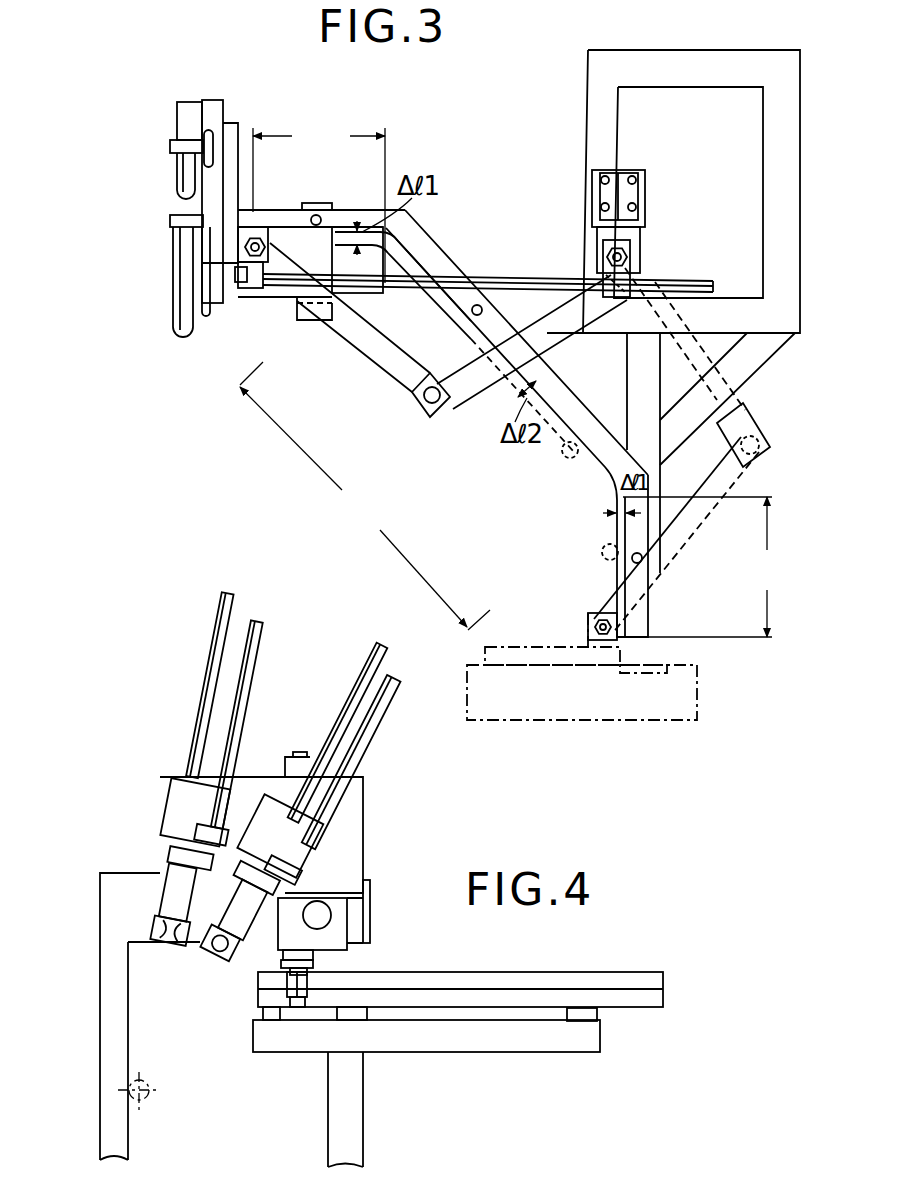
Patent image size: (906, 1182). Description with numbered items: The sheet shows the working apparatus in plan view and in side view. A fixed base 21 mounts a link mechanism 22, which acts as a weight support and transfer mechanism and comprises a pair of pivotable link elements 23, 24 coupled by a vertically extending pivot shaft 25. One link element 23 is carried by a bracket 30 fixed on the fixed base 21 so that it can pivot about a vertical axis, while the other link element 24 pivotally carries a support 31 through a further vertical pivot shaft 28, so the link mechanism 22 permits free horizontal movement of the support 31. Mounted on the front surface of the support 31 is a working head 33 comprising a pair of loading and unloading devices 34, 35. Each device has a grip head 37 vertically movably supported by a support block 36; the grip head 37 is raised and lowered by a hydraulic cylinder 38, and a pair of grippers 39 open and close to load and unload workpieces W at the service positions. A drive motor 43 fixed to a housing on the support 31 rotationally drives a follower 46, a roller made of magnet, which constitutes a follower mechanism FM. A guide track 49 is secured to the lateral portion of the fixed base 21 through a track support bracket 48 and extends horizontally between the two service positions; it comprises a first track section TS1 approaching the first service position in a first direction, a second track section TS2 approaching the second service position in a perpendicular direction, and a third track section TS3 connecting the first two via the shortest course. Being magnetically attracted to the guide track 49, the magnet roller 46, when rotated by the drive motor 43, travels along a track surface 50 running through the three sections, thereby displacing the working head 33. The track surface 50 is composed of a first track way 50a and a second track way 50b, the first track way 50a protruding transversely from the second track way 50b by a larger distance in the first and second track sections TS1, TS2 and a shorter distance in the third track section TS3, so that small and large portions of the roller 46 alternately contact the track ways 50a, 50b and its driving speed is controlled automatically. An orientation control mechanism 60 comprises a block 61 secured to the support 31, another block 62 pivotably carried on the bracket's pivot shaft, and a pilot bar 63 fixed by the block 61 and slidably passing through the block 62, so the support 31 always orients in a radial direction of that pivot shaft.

In FIG. 3, the fixed base 21 is at (793, 333).
In FIG. 4, the fixed base 21 is at (110, 990).
In FIG. 3, the link mechanism 22 is at (355, 378).
In FIG. 3, the link element 23 is at (533, 333).
In FIG. 3, the link element 24 is at (346, 342).
In FIG. 3, the pivot shaft 25 is at (433, 413).
In FIG. 3, the pivot shaft 28 is at (257, 236).
In FIG. 3, the bracket 30 is at (642, 233).
In FIG. 3, the support 31 is at (226, 130).
In FIG. 4, the support 31 is at (355, 835).
In FIG. 3, the working head 33 is at (150, 239).
In FIG. 4, the loading and unloading device 34 is at (185, 723).
In FIG. 4, the loading and unloading device 35 is at (365, 762).
In FIG. 4, the support block 36 is at (180, 805).
In FIG. 4, the grip head 37 is at (170, 892).
In FIG. 4, the hydraulic cylinder 38 is at (245, 670).
In FIG. 4, the grippers 39 is at (150, 928).
In FIG. 3, the drive motor 43 is at (385, 262).
In FIG. 4, the drive motor 43 is at (330, 916).
In FIG. 3, the follower 46 is at (562, 458).
In FIG. 4, the follower 46 is at (315, 975).
In FIG. 3, the track support bracket 48 is at (648, 430).
In FIG. 4, the track support bracket 48 is at (480, 1040).
In FIG. 3, the guide track 49 is at (650, 522).
In FIG. 4, the guide track 49 is at (633, 975).
In FIG. 3, the track surface 50 is at (447, 305).
In FIG. 3, the first track way 50a is at (468, 332).
In FIG. 3, the second track way 50b is at (430, 298).
In FIG. 3, the orientation control mechanism 60 is at (494, 266).
In FIG. 3, the block 61 is at (250, 290).
In FIG. 3, the block 62 is at (632, 262).
In FIG. 3, the pilot bar 63 is at (533, 280).
In FIG. 4, the workpiece W is at (125, 1090).
In FIG. 4, the follower mechanism FM is at (292, 1008).
In FIG. 3, the first track section TS1 is at (319, 200).
In FIG. 3, the second track section TS2 is at (708, 567).
In FIG. 3, the third track section TS3 is at (365, 496).